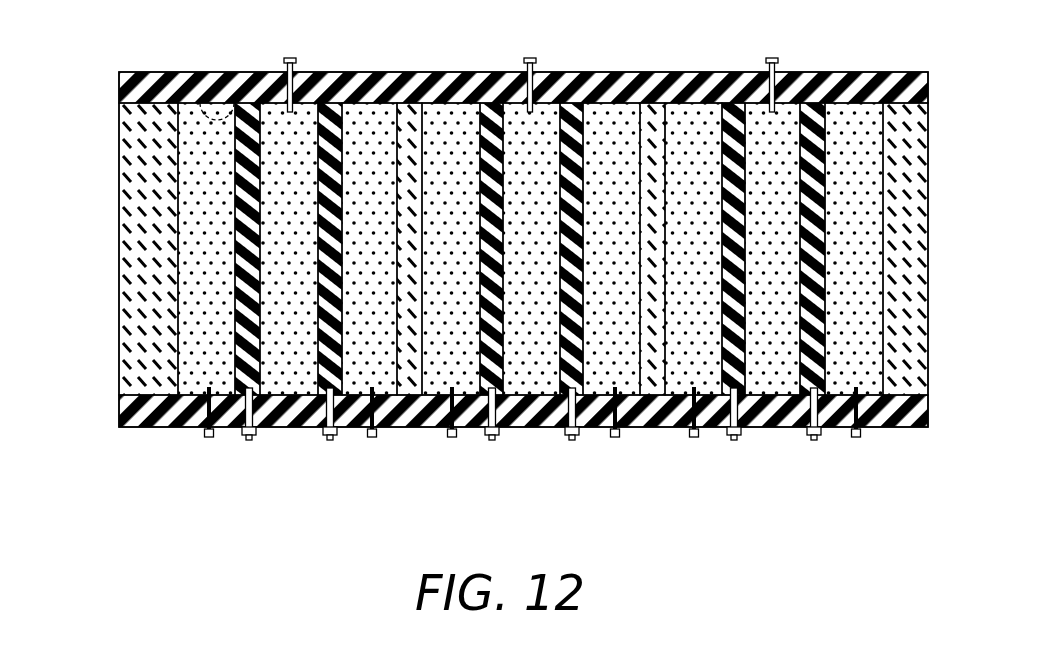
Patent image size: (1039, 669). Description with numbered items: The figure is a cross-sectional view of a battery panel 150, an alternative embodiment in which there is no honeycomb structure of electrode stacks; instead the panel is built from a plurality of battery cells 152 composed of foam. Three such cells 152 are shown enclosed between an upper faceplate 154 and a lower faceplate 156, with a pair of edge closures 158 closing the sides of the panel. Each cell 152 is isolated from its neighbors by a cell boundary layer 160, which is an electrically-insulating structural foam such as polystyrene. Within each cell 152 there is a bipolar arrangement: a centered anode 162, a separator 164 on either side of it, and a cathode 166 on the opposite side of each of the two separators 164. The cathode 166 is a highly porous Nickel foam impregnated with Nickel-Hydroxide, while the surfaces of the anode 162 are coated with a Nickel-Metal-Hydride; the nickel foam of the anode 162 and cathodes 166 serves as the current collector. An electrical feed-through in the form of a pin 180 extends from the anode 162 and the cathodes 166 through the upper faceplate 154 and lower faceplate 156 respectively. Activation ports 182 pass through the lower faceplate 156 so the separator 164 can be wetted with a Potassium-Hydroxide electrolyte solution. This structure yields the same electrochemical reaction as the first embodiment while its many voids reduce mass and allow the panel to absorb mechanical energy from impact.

The battery panel 150 is at (213, 512).
The battery cell 152 is at (701, 123).
The upper faceplate 154 is at (327, 72).
The lower faceplate 156 is at (772, 415).
The edge closure 158 is at (137, 335).
The cell boundary layer 160 is at (410, 377).
The anode 162 is at (299, 363).
The separator 164 is at (317, 370).
The cathode 166 is at (192, 372).
The pin 180 is at (776, 63).
The activation port 182 is at (817, 432).